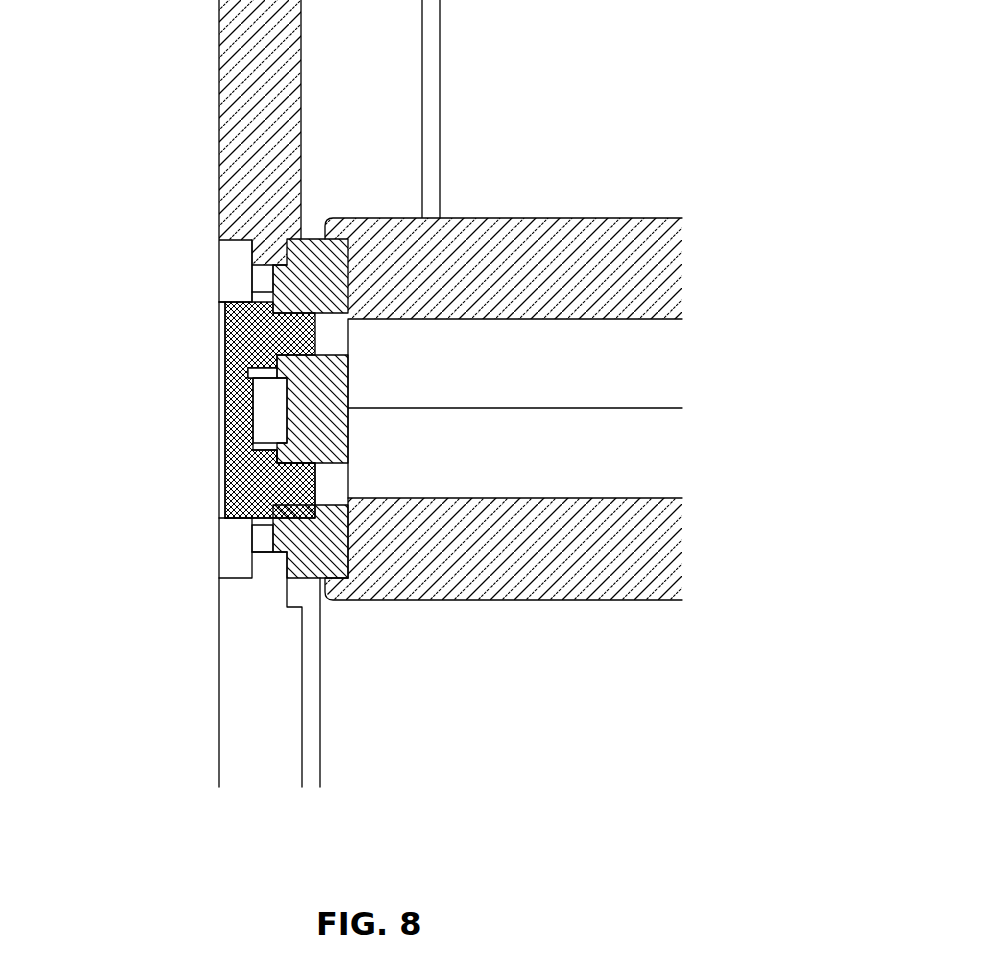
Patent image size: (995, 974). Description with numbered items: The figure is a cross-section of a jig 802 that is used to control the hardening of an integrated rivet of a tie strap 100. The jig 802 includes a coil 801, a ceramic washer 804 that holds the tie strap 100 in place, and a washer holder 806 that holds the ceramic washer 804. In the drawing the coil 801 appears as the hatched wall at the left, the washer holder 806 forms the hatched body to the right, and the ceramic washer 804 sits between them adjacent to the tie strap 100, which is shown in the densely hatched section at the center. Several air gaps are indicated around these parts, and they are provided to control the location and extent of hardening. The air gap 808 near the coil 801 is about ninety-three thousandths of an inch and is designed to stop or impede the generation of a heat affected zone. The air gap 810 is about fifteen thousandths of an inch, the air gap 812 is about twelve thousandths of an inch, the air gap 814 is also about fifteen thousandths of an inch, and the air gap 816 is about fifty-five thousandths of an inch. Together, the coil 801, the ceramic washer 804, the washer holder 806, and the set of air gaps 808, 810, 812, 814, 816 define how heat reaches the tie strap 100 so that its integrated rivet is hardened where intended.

The coil 801 is at (240, 168).
The jig 802 is at (488, 131).
The ceramic washer 804 is at (322, 272).
The washer holder 806 is at (473, 572).
The air gap 808 is at (237, 263).
The air gap 810 is at (218, 305).
The tie strap 100 is at (250, 337).
The air gap 812 is at (248, 412).
The air gap 814 is at (265, 450).
The air gap 816 is at (265, 537).